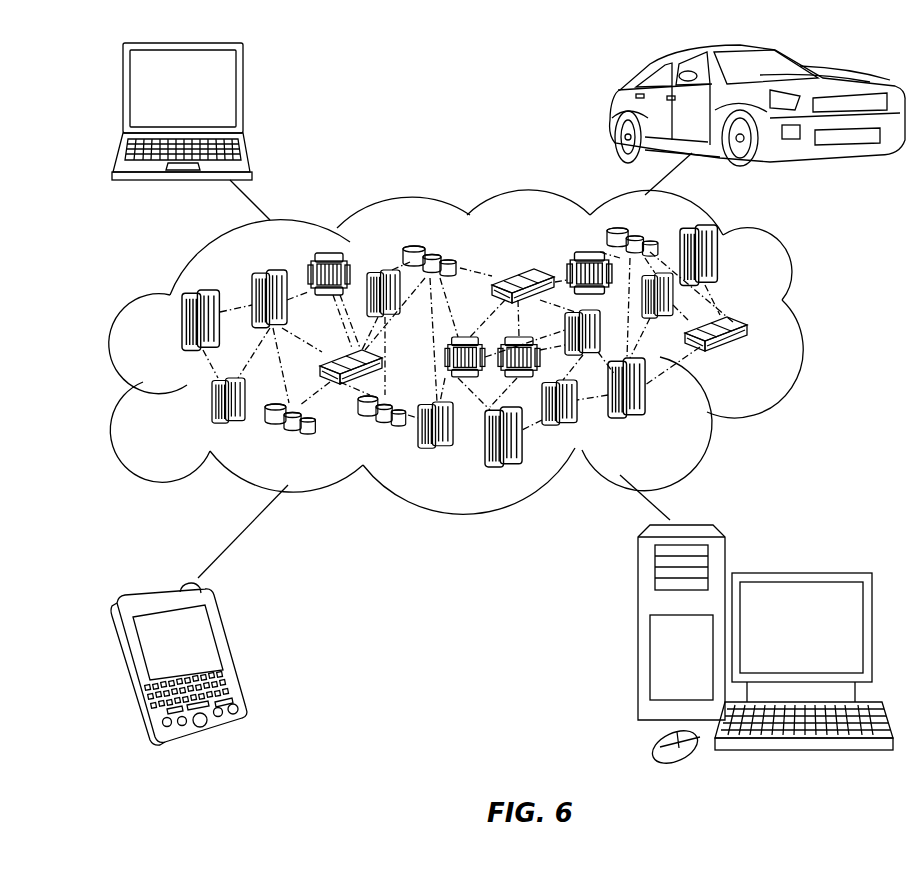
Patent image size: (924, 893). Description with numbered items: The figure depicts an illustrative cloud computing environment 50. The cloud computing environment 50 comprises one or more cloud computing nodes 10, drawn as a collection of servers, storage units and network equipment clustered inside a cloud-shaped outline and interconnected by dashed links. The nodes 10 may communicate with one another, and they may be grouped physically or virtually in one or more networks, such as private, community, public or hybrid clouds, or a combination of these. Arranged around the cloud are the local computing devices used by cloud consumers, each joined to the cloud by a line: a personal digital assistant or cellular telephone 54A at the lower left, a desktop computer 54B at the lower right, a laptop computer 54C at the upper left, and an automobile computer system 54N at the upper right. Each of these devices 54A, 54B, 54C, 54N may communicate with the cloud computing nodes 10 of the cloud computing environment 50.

The cloud computing nodes 10 is at (507, 406).
The cloud computing environment 50 is at (800, 327).
The personal digital assistant (PDA) or cellular telephone 54A is at (233, 652).
The desktop computer 54B is at (800, 573).
The laptop computer 54C is at (245, 97).
The automobile computer system 54N is at (612, 108).